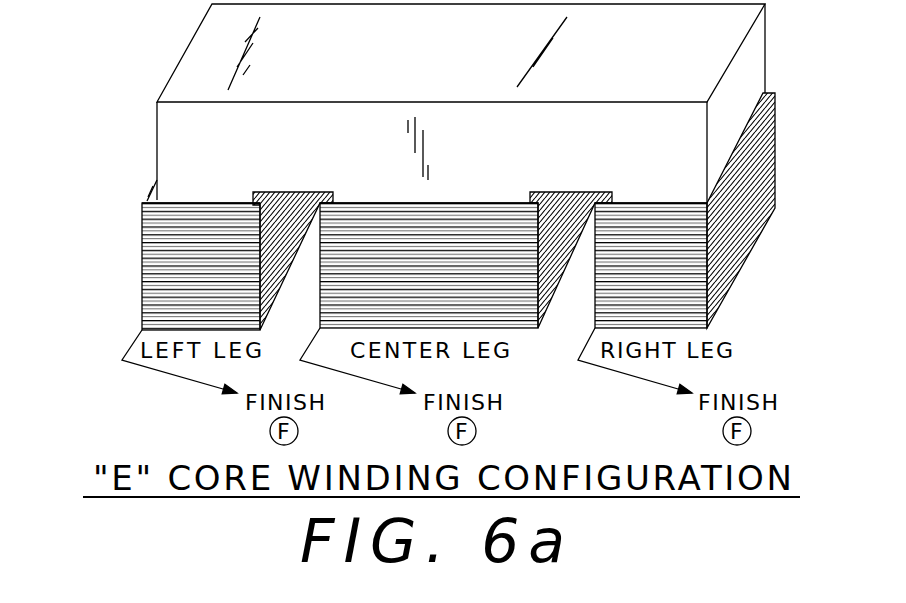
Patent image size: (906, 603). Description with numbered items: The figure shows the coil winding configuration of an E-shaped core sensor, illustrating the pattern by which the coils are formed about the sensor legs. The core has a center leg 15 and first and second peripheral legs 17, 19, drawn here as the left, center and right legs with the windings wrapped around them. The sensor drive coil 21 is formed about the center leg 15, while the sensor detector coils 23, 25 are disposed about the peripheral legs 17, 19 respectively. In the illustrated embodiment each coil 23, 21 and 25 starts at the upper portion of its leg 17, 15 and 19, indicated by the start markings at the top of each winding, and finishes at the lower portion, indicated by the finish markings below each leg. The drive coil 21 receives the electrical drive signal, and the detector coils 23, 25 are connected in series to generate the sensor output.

The center leg 15 is at (543, 322).
The first peripheral leg 17 is at (142, 284).
The second peripheral leg 19 is at (743, 273).
The sensor drive coil 21 is at (372, 154).
The sensor detector coil 23 is at (145, 201).
The sensor detector coil 25 is at (602, 155).